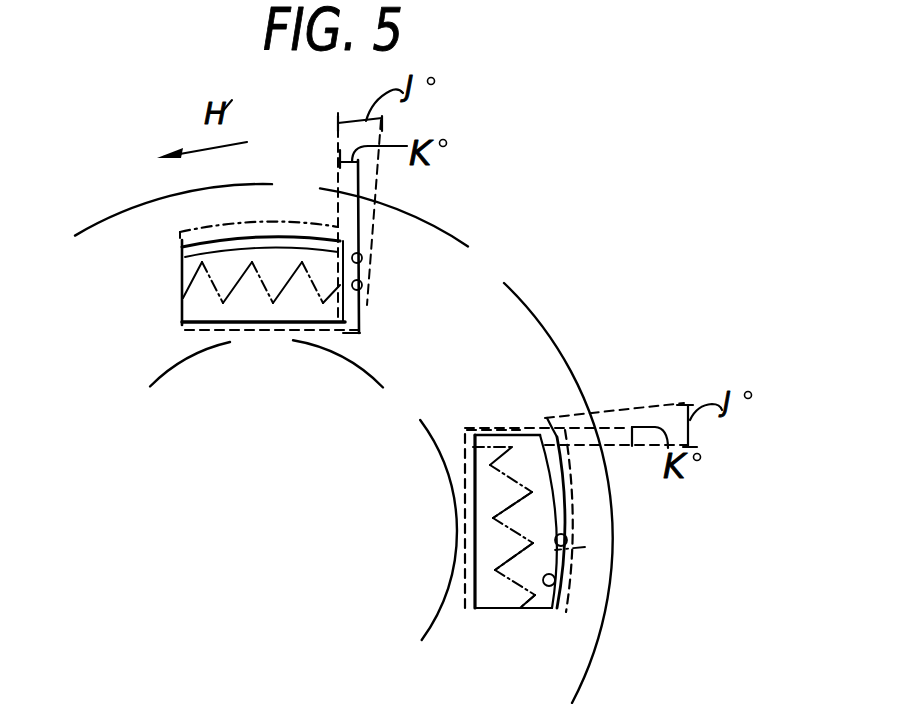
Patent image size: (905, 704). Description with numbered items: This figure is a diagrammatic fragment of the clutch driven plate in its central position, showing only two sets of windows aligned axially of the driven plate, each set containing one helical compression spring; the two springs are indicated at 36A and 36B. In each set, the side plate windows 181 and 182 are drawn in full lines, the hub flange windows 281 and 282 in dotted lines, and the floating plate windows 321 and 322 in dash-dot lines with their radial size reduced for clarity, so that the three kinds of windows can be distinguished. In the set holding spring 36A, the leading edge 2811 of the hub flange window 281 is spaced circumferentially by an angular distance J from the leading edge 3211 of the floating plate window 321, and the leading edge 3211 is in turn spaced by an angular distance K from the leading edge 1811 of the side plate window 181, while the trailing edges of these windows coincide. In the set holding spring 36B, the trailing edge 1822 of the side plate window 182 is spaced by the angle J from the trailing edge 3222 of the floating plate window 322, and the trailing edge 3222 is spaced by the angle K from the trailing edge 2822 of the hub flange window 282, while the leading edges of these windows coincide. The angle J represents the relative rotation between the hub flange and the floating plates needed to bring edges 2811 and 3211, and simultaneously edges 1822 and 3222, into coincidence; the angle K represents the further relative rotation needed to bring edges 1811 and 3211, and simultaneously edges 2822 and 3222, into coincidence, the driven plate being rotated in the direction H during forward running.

The helical compression spring 36B is at (227, 297).
The floating plate window 322 is at (237, 234).
The trailing edge of floating plate window 3222 is at (345, 280).
The trailing edge of hub flange window 2822 is at (327, 327).
The side plate window 182 is at (359, 259).
The trailing edge of side plate window 1822 is at (358, 287).
The hub flange window 282 is at (385, 204).
The helical compression spring 36A is at (498, 572).
The leading edge of floating plate window 3211 is at (473, 447).
The side plate window 181 is at (560, 594).
The hub flange window 281 is at (575, 505).
The floating plate window 321 is at (585, 547).
The leading edge of hub flange window 2811 is at (503, 427).
The leading edge of side plate window 1811 is at (529, 427).